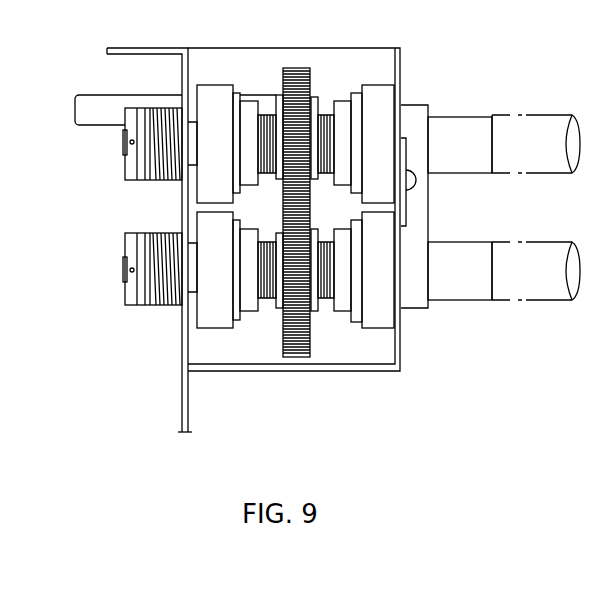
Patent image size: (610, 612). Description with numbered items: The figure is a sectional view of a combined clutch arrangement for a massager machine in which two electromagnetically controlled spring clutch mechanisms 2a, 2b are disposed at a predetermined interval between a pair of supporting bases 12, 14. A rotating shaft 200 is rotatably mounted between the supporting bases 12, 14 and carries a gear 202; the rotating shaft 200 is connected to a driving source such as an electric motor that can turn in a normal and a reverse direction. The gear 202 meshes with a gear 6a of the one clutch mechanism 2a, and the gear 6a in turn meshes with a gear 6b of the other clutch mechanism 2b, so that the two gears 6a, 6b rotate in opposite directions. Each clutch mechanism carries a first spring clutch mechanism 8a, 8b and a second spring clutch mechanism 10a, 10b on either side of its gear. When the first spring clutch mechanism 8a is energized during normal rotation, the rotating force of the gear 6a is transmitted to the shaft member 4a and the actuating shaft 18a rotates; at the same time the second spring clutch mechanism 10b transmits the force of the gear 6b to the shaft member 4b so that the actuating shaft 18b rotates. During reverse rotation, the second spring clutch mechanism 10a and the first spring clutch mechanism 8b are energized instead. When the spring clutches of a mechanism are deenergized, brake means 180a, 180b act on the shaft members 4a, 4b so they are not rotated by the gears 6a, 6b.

The supporting base 12 is at (403, 77).
The supporting base 14 is at (185, 207).
The rotating shaft 200 is at (92, 122).
The brake means 180a is at (134, 184).
The brake means 180b is at (147, 313).
The gear 202 is at (290, 72).
The first spring clutch mechanism 8a is at (251, 86).
The first spring clutch mechanism 8b is at (247, 328).
The electromagnetically controlled spring clutch mechanism 2a is at (324, 96).
The electromagnetically controlled spring clutch mechanism 2b is at (329, 322).
The gear 6a is at (303, 153).
The gear 6b is at (293, 340).
The second spring clutch mechanism 10a is at (349, 82).
The second spring clutch mechanism 10b is at (356, 330).
The shaft member 4a is at (462, 116).
The shaft member 4b is at (465, 300).
The actuating shaft 18a is at (533, 112).
The actuating shaft 18b is at (508, 302).